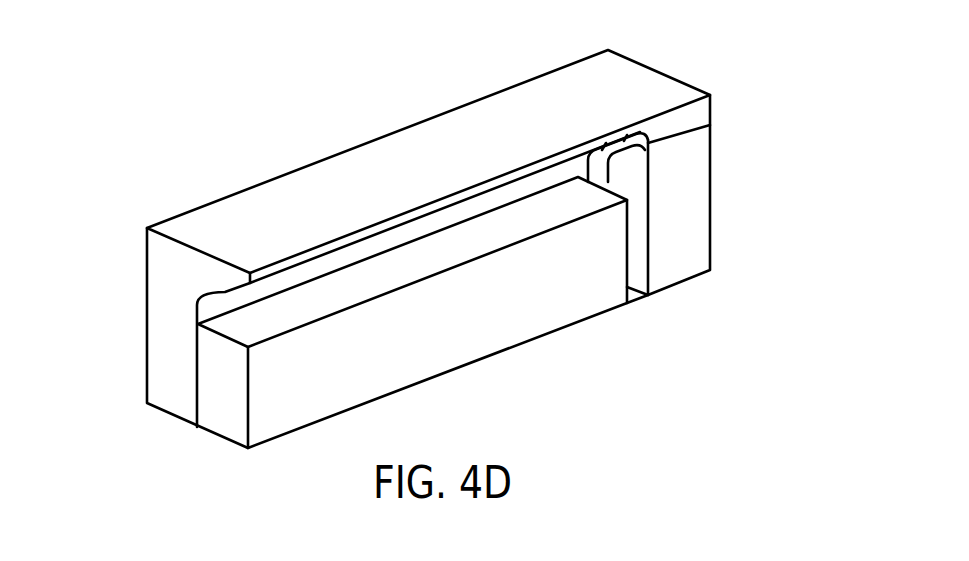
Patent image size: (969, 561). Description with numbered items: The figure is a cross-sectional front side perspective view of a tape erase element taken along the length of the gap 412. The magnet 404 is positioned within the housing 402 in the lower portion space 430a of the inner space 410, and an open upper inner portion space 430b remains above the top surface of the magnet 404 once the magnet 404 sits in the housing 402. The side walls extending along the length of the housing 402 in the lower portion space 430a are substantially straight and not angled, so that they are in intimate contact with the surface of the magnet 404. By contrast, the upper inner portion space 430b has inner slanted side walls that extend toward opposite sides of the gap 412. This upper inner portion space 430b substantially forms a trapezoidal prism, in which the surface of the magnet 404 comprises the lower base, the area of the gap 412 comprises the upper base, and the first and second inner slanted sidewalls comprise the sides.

The housing 402 is at (673, 92).
The magnet 404 is at (510, 352).
The inner space 410 is at (626, 187).
The gap 412 is at (393, 210).
The lower portion space 430a is at (632, 272).
The upper inner portion space 430b is at (215, 305).